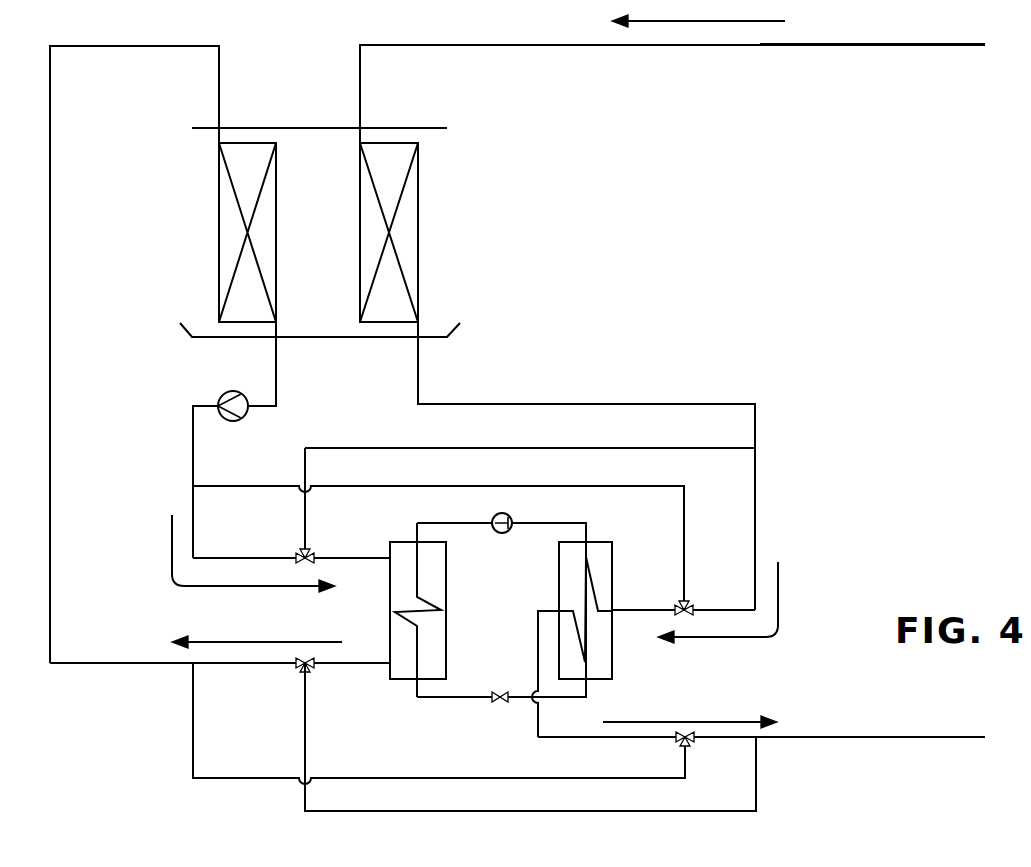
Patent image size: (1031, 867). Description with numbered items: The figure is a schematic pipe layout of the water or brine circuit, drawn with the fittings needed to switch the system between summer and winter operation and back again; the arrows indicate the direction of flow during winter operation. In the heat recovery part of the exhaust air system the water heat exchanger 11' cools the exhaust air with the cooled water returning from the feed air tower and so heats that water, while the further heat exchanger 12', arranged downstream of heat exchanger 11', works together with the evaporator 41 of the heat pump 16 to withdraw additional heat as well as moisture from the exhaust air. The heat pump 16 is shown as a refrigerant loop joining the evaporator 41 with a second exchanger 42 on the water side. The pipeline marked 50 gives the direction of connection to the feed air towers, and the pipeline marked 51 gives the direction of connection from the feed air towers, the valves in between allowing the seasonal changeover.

The heat exchanger 12' is at (267, 232).
The water heat exchanger 11' is at (373, 232).
The direction of connection from the feed air towers 51 is at (985, 44).
The direction of connection to the feed air towers 50 is at (962, 736).
The heat pump 16 is at (518, 553).
The evaporator 41 is at (438, 593).
The second heat exchanger 42 is at (570, 597).